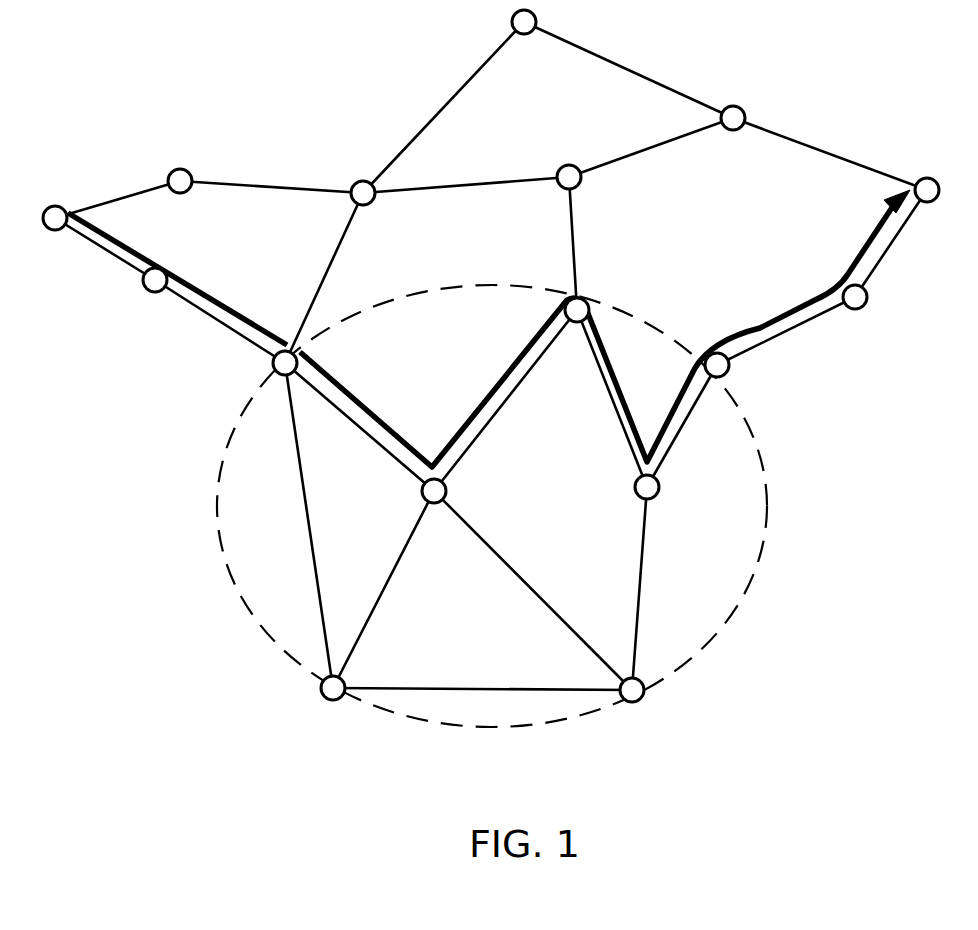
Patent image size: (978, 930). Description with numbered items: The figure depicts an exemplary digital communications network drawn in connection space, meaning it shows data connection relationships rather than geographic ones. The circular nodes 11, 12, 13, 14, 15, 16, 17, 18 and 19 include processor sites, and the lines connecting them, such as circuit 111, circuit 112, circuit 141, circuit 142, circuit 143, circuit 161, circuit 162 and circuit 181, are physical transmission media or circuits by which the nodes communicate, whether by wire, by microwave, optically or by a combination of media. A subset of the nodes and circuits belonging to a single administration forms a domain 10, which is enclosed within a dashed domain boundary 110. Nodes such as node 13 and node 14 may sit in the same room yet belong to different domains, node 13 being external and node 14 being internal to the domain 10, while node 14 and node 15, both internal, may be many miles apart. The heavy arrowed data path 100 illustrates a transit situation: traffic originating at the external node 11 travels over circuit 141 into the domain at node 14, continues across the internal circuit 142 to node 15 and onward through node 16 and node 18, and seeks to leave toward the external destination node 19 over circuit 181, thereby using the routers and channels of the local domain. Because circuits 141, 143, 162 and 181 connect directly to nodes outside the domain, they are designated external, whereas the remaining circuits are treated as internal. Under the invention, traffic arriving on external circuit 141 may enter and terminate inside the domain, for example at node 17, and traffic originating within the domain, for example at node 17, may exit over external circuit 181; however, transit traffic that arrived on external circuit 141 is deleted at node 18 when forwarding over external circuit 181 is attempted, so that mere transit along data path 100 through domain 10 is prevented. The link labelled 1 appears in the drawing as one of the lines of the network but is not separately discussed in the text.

The link 1 is at (308, 525).
The domain 10 is at (553, 356).
The node 11 is at (39, 210).
The node 12 is at (143, 294).
The node 13 is at (179, 167).
The node 14 is at (274, 383).
The node 15 is at (423, 505).
The node 16 is at (572, 331).
The node 17 is at (635, 706).
The node 18 is at (719, 386).
The node 19 is at (940, 180).
The data path 100 is at (811, 304).
The domain boundary 110 is at (742, 597).
The circuit 111 is at (105, 250).
The circuit 112 is at (117, 196).
The circuit 141 is at (220, 321).
The circuit 142 is at (359, 427).
The circuit 143 is at (336, 278).
The link 161 is at (642, 398).
The circuit 162 is at (596, 243).
The circuit 181 is at (786, 331).